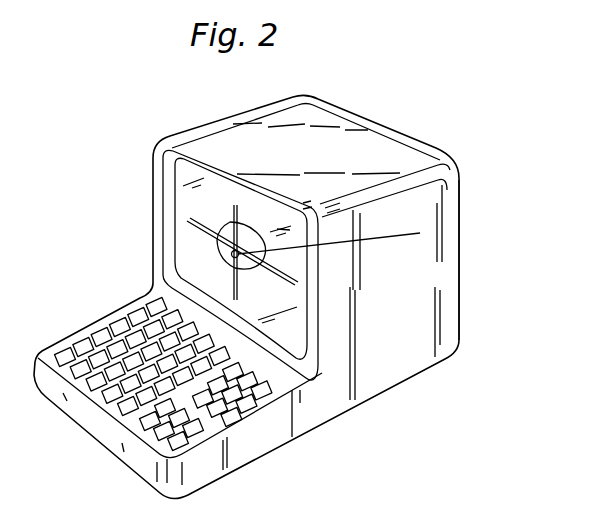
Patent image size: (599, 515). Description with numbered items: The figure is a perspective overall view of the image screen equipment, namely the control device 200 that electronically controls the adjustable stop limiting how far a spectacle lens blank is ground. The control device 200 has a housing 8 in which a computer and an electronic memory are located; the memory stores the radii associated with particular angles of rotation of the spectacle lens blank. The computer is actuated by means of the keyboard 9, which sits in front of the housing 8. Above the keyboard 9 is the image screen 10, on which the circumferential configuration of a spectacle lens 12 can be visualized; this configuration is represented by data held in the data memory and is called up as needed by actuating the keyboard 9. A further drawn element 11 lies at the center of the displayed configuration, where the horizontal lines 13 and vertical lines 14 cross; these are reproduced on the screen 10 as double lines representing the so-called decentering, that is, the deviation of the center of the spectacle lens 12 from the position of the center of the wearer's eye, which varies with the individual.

The control device 200 is at (452, 112).
The housing 8 is at (460, 293).
The keyboard 9 is at (232, 412).
The image screen 10 is at (188, 207).
The cursor 11 is at (232, 255).
The spectacle lens 12 is at (420, 233).
The horizontal lines 13 is at (196, 232).
The vertical lines 14 is at (234, 205).